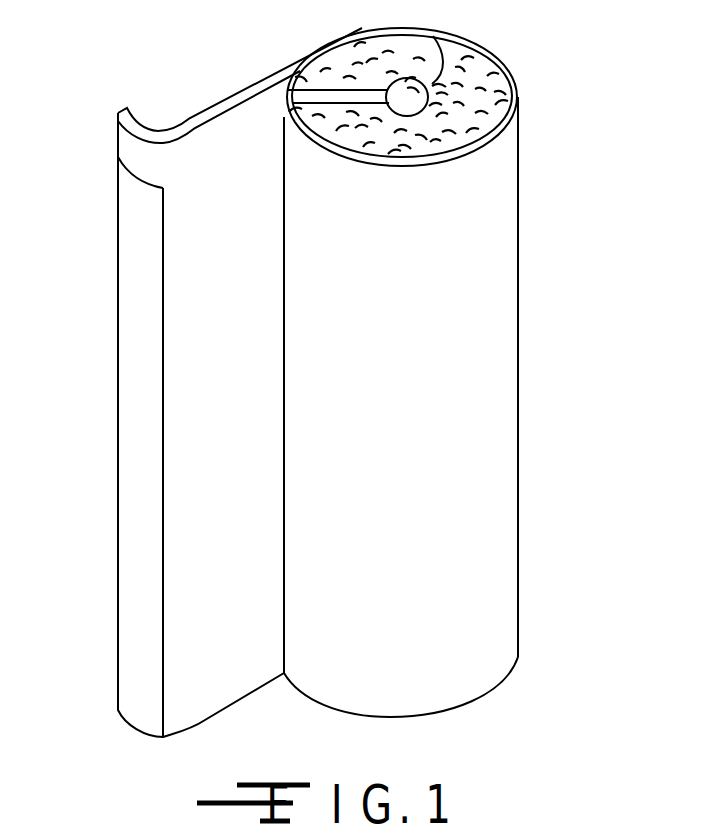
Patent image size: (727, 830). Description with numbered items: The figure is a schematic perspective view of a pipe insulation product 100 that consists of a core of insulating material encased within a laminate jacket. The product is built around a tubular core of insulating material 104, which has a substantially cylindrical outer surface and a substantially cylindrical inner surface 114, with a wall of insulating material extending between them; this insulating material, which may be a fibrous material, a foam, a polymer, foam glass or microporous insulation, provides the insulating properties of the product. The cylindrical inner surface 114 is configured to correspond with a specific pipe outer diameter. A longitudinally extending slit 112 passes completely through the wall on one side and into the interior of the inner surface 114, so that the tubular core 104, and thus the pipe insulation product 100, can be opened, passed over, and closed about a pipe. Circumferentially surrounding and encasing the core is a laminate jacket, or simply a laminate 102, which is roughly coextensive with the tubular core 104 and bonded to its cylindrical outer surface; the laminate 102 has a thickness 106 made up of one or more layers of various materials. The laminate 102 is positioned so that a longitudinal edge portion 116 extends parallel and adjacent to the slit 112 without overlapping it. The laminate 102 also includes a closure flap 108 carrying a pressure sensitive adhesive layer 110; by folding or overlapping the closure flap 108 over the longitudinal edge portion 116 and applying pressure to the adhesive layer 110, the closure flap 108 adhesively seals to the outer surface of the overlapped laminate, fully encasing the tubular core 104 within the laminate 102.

The pipe insulation product 100 is at (592, 79).
The laminate jacket 102 is at (495, 565).
The tubular core of insulating material 104 is at (517, 100).
The thickness 106 is at (378, 145).
The closure flap 108 is at (148, 154).
The pressure sensitive adhesive layer 110 is at (132, 558).
The longitudinally extending slit 112 is at (323, 92).
The cylindrical inner surface 114 is at (433, 36).
The longitudinal edge portion 116 is at (303, 490).